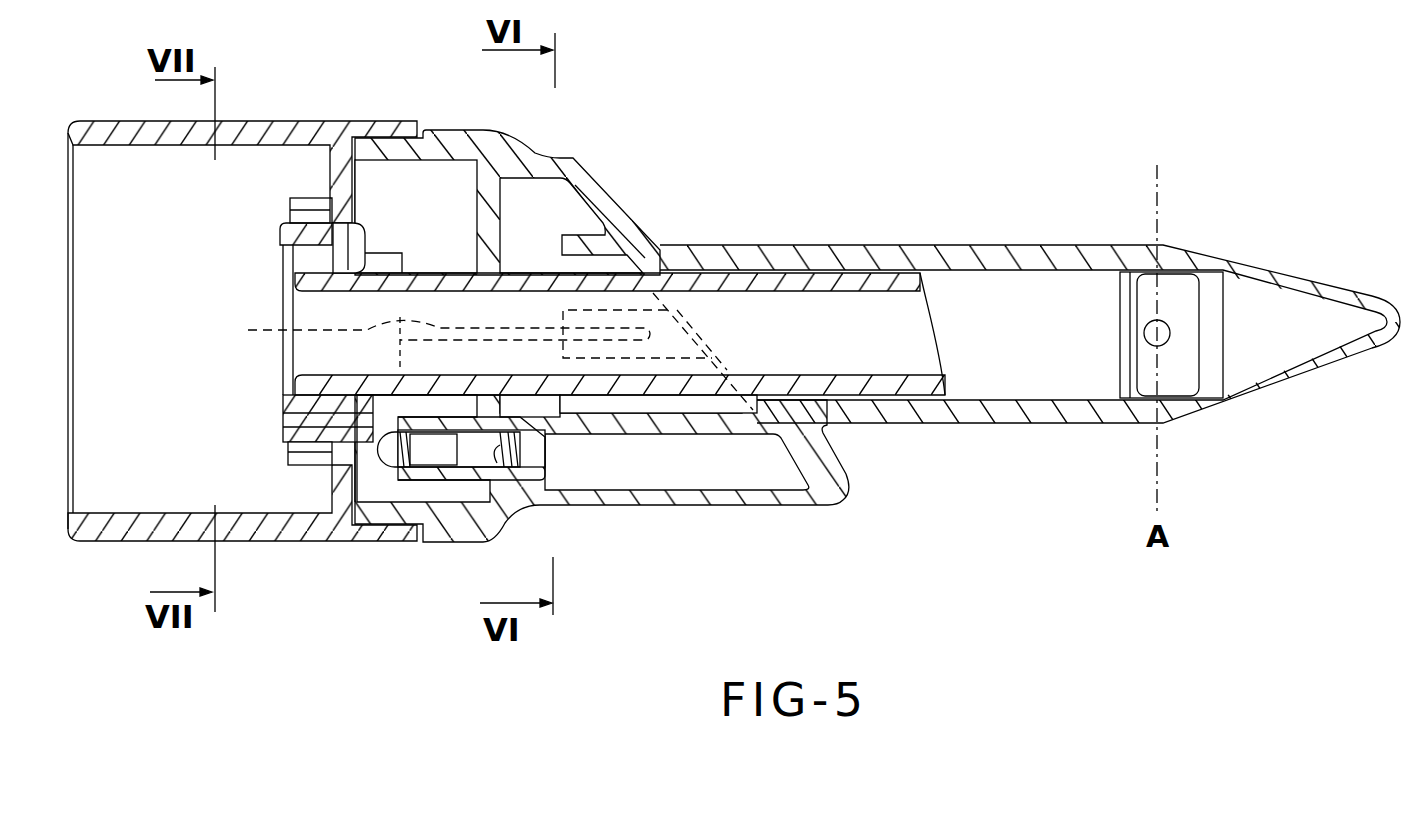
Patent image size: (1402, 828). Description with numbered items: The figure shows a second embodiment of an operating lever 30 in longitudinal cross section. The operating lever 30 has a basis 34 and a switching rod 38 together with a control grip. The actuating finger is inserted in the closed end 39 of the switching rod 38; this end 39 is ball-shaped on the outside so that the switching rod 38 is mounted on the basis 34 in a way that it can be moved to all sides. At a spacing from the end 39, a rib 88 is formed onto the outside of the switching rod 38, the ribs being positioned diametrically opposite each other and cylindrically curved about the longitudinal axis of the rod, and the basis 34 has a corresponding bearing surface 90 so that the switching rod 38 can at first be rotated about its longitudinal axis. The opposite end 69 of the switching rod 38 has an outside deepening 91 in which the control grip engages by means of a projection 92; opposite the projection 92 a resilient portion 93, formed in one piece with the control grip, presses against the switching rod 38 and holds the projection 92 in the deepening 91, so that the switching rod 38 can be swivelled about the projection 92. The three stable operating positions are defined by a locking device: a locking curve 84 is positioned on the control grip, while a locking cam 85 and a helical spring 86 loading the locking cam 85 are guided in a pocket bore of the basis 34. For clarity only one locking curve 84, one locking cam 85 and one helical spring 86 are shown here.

The operating lever 30 is at (713, 203).
The basis 34 is at (1012, 247).
The switching rod 38 is at (817, 277).
The closed end 39 is at (1213, 405).
The end 69 is at (307, 388).
The locking curve 84 is at (373, 442).
The locking cam 85 is at (442, 462).
The helical spring 86 is at (497, 463).
The rib 88 is at (480, 351).
The bearing surface 90 is at (400, 357).
The outside deepening 91 is at (307, 257).
The projection 92 is at (342, 265).
The resilient portion 93 is at (280, 430).